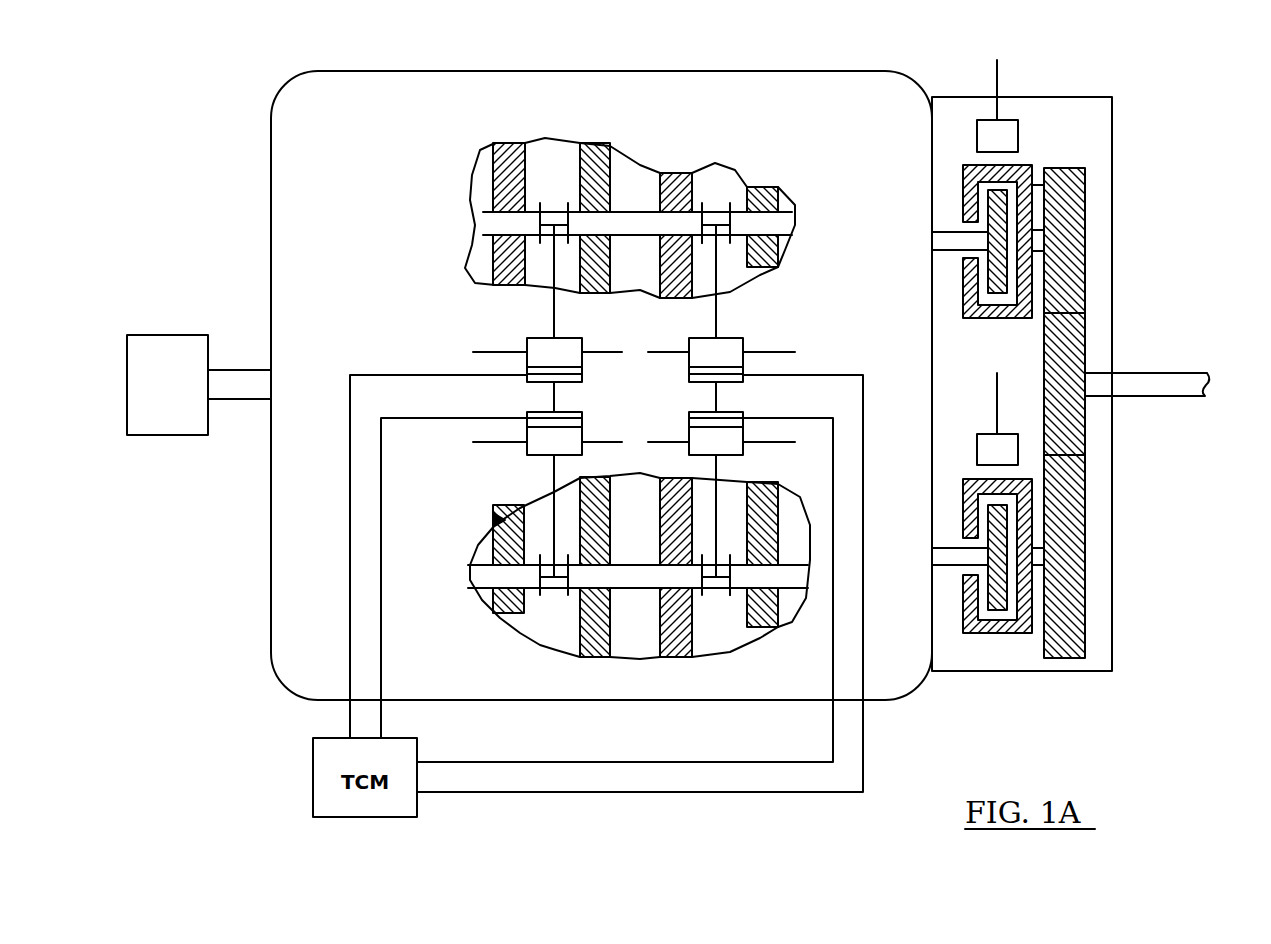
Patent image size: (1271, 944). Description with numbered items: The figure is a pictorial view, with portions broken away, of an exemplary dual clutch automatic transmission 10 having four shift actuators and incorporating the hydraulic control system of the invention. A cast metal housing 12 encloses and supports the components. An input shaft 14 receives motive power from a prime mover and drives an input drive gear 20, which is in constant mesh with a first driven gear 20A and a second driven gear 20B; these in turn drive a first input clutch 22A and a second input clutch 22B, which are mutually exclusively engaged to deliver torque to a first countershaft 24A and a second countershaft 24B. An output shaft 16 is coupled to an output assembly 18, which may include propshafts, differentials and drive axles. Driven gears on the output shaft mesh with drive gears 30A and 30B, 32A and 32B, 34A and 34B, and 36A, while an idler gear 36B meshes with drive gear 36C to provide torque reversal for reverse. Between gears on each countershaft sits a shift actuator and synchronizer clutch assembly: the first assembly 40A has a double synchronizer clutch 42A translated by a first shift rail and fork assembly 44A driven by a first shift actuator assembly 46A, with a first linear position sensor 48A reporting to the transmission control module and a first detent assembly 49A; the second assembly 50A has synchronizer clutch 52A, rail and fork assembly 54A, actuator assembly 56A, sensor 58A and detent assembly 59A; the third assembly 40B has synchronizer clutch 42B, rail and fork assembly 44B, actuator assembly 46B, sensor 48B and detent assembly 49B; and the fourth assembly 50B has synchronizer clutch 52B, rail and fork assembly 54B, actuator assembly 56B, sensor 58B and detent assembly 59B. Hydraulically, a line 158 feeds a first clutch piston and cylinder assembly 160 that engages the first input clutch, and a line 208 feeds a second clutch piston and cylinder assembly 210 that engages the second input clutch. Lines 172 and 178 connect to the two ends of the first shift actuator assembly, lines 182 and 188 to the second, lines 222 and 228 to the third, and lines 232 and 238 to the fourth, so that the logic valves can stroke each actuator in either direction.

The dual clutch automatic transmission 10 is at (1181, 128).
The housing 12 is at (917, 78).
The input shaft 14 is at (1172, 372).
The output shaft 16 is at (232, 375).
The output assembly 18 is at (150, 335).
The input drive gear 20 is at (1072, 360).
The first driven gear 20A is at (1072, 220).
The second driven gear 20B is at (1072, 570).
The first input clutch 22A is at (1033, 185).
The second input clutch 22B is at (1000, 628).
The first countershaft 24A is at (782, 222).
The second countershaft 24B is at (790, 576).
The drive gear 30A is at (785, 206).
The drive gear 30B is at (770, 623).
The drive gear 32A is at (675, 180).
The drive gear 32B is at (673, 632).
The drive gear 34A is at (594, 150).
The drive gear 34B is at (598, 632).
The drive gear 36A is at (502, 183).
The idler gear 36B is at (500, 529).
The drive gear 36C is at (507, 600).
The first shift actuator and synchronizer clutch assembly 40A is at (812, 156).
The third shift actuator and synchronizer clutch assembly 40B is at (737, 676).
The first synchronizer clutch 42A is at (712, 212).
The third synchronizer clutch 42B is at (713, 582).
The first shift rail and fork assembly 44A is at (717, 270).
The third shift rail and fork assembly 44B is at (722, 530).
The first shift actuator assembly 46A is at (737, 340).
The third shift actuator assembly 46B is at (737, 457).
The first linear position sensor 48A is at (736, 372).
The third linear position sensor 48B is at (737, 418).
The first detent assembly 49A is at (710, 316).
The third detent assembly 49B is at (710, 512).
The second shift actuator and synchronizer clutch assembly 50A is at (470, 137).
The fourth shift actuator and synchronizer clutch assembly 50B is at (495, 676).
The second synchronizer clutch 52A is at (560, 212).
The fourth synchronizer clutch 52B is at (548, 580).
The second shift rail and fork assembly 54A is at (552, 272).
The fourth shift rail and fork assembly 54B is at (505, 525).
The second shift actuator assembly 56A is at (541, 340).
The fourth shift actuator assembly 56B is at (543, 457).
The second linear position sensor 58A is at (541, 372).
The fourth linear position sensor 58B is at (541, 418).
The second detent assembly 59A is at (560, 316).
The fourth detent assembly 59B is at (562, 513).
The line 158 is at (998, 93).
The first clutch piston and cylinder assembly 160 is at (1005, 136).
The line 172 is at (793, 352).
The line 178 is at (650, 353).
The line 182 is at (620, 353).
The line 188 is at (474, 352).
The line 208 is at (995, 388).
The second clutch piston and cylinder assembly 210 is at (985, 453).
The line 222 is at (793, 442).
The line 228 is at (650, 441).
The line 232 is at (620, 441).
The line 238 is at (474, 442).